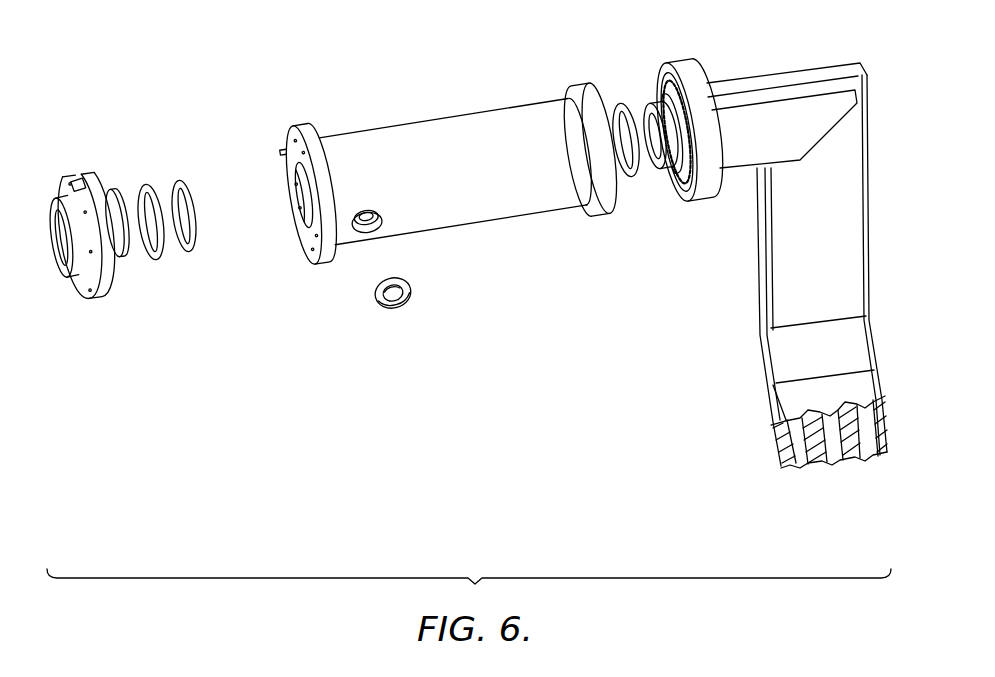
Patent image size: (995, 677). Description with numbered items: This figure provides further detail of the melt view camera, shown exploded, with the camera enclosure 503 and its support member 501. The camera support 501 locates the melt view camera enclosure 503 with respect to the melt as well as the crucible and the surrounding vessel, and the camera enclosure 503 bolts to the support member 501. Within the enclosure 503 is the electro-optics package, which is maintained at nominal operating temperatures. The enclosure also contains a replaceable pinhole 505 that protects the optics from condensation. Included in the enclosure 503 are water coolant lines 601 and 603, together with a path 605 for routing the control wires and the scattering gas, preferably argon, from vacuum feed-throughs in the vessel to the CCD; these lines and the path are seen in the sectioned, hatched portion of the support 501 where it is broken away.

The support member 501 is at (790, 257).
The camera enclosure 503 is at (458, 78).
The replaceable pinhole 505 is at (383, 306).
The water coolant line 601 is at (797, 445).
The water coolant line 603 is at (864, 432).
The path 605 is at (833, 440).